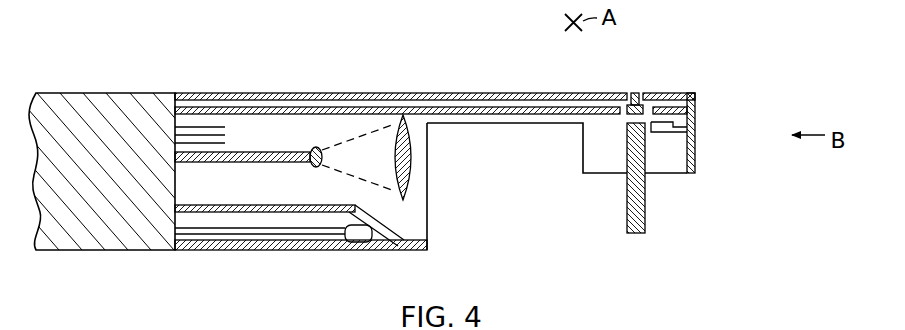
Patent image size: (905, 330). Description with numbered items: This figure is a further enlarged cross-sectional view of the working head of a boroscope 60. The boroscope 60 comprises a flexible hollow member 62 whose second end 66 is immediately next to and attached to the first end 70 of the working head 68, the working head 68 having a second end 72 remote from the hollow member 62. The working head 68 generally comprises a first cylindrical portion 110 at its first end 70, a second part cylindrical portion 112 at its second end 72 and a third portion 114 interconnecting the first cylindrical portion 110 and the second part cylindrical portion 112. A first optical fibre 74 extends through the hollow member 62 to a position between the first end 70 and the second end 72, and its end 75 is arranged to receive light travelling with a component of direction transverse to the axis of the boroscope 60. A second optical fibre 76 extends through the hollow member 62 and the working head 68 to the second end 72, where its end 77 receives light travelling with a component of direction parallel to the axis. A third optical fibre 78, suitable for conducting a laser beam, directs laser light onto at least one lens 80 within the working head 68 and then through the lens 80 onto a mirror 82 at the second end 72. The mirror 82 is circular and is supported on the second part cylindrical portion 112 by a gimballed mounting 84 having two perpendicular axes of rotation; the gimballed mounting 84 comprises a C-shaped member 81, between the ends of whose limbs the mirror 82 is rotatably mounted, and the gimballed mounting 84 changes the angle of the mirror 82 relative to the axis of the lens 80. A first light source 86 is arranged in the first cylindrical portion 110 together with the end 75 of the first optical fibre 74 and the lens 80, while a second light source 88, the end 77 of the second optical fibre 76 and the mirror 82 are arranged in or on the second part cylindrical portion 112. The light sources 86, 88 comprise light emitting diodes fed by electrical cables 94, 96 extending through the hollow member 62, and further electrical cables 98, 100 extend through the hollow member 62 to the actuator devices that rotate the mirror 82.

The boroscope 60 is at (413, 159).
The flexible hollow member 62 is at (145, 176).
The second end of the hollow member 66 is at (143, 228).
The working head 68 is at (715, 101).
The first end of the working head 70 is at (200, 94).
The second end of the working head 72 is at (697, 150).
The first optical fibre 74 is at (304, 252).
The end of the first optical fibre 75 is at (402, 250).
The second optical fibre 76 is at (293, 108).
The end of the second optical fibre 77 is at (697, 108).
The third optical fibre 78 is at (238, 152).
The lens 80 is at (413, 178).
The C-shaped member 81 is at (624, 93).
The mirror 82 is at (648, 212).
The gimballed mounting 84 is at (592, 186).
The first light source 86 is at (360, 243).
The second light source 88 is at (697, 125).
The electrical cable 94 is at (301, 265).
The electrical cable 96 is at (660, 133).
The electrical cable 98 is at (184, 174).
The electrical cable 100 is at (200, 127).
The first cylindrical portion 110 is at (435, 71).
The second part cylindrical portion 112 is at (695, 93).
The third portion 114 is at (518, 93).